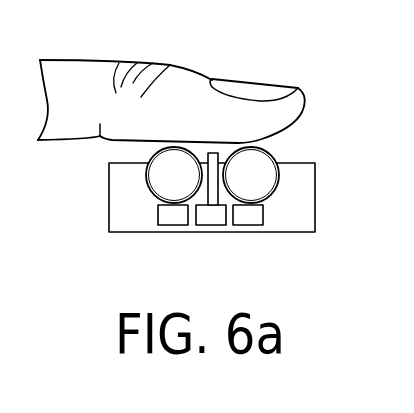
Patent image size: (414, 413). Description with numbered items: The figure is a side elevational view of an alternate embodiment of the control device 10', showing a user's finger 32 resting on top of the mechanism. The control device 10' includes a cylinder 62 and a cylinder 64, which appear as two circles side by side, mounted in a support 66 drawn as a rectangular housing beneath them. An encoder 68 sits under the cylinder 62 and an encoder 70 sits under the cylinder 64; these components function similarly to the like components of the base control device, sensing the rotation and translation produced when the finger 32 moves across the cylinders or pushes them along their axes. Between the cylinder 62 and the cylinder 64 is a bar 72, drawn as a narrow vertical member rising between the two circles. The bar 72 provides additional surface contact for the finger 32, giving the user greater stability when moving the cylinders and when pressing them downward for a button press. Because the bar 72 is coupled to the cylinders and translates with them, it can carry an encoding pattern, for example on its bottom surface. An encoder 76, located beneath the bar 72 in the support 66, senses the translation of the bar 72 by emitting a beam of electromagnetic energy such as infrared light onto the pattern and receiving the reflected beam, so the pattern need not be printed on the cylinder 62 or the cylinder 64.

The control device 10' is at (217, 149).
The finger 32 is at (192, 86).
The cylinder 62 is at (158, 156).
The cylinder 64 is at (274, 159).
The support 66 is at (116, 220).
The encoder 68 is at (172, 220).
The encoder 70 is at (256, 216).
The bar 72 is at (213, 184).
The encoder 76 is at (215, 221).